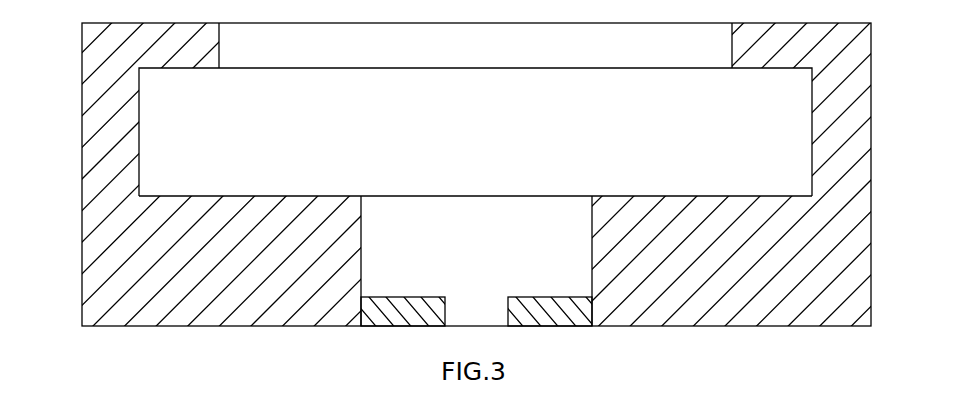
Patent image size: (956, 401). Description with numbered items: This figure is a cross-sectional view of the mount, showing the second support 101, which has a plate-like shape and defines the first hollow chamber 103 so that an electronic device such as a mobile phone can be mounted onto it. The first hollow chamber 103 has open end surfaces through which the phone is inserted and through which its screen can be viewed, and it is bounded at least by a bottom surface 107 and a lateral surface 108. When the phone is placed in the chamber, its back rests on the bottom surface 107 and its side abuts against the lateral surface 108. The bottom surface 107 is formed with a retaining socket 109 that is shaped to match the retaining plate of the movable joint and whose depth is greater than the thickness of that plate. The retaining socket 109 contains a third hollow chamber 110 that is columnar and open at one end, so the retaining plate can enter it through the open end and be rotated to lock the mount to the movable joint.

The second support 101 is at (830, 103).
The first hollow chamber 103 is at (721, 79).
The bottom surface 107 is at (255, 199).
The lateral surface 108 is at (198, 100).
The retaining socket 109 is at (490, 314).
The third hollow chamber 110 is at (496, 259).